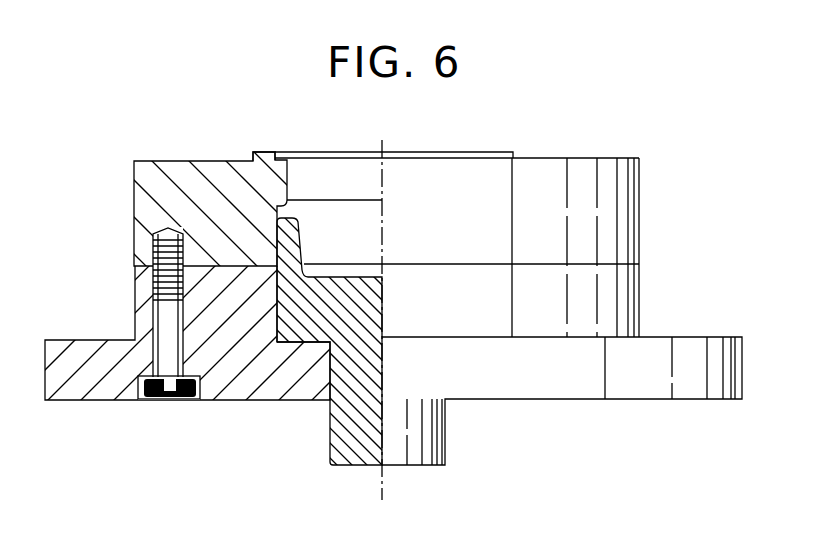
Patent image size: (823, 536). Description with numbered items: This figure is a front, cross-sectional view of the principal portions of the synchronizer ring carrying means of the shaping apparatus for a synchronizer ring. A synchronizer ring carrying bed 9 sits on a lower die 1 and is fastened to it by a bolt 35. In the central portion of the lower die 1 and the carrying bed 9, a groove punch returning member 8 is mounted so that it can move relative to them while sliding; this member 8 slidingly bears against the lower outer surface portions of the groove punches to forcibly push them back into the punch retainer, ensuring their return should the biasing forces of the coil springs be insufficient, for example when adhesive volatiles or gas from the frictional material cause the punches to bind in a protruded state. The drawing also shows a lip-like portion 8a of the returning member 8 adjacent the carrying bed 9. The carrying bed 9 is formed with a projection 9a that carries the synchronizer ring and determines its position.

The lower die 1 is at (140, 299).
The groove punch returning member 8 is at (332, 445).
The lip of hub 8a is at (299, 242).
The synchronizer ring carrying bed 9 is at (145, 208).
The projection 9a is at (267, 165).
The bolt 35 is at (148, 338).